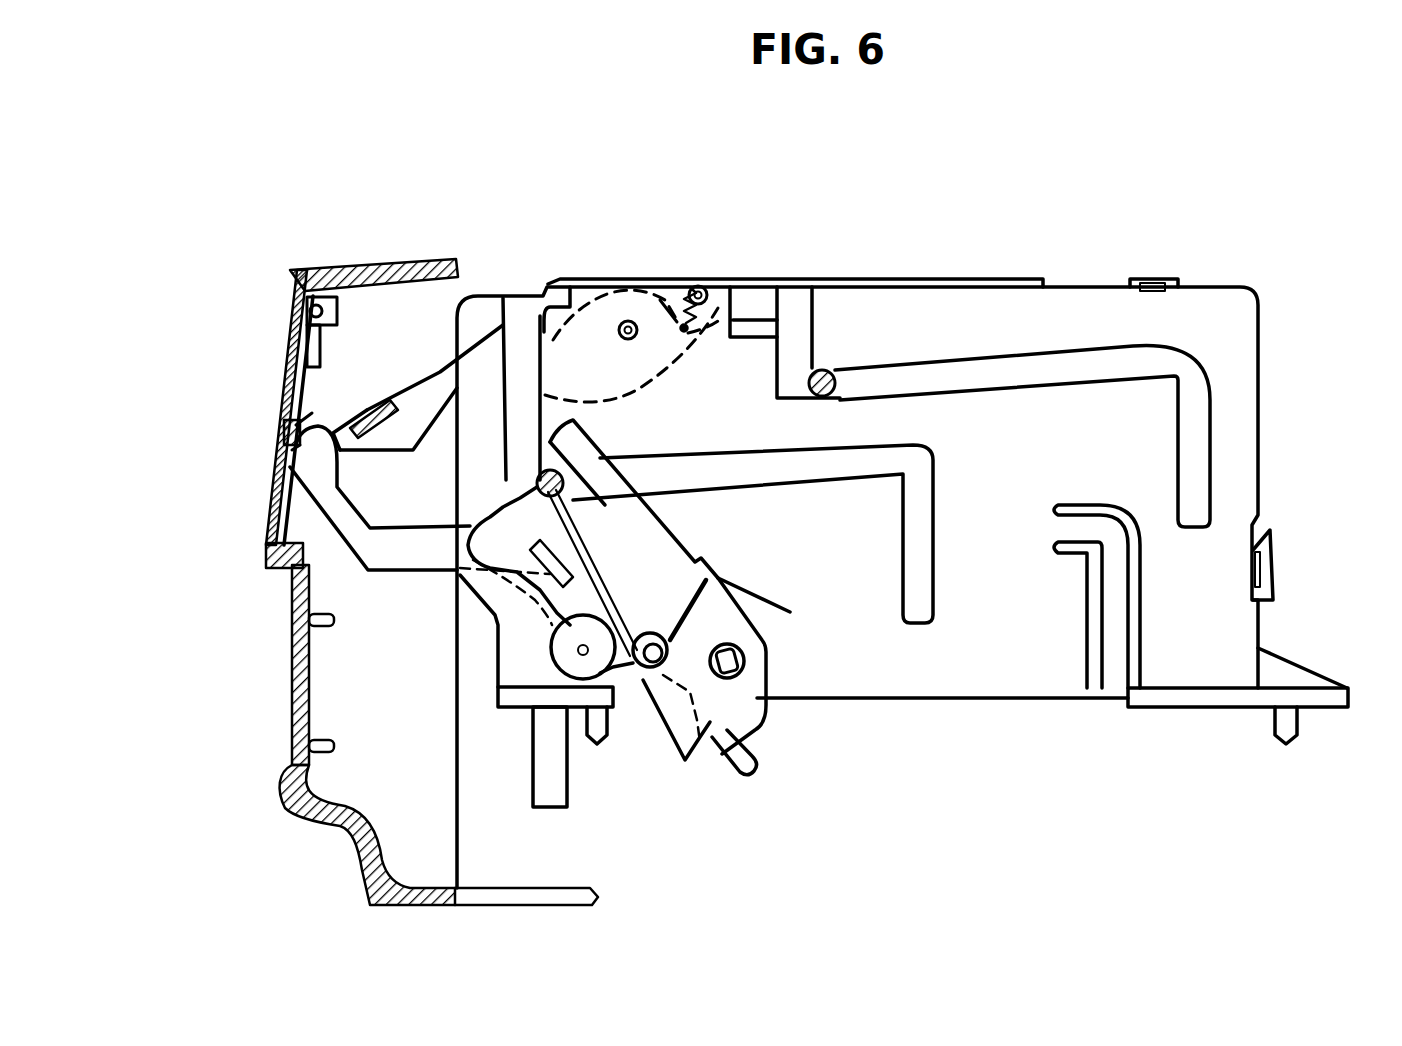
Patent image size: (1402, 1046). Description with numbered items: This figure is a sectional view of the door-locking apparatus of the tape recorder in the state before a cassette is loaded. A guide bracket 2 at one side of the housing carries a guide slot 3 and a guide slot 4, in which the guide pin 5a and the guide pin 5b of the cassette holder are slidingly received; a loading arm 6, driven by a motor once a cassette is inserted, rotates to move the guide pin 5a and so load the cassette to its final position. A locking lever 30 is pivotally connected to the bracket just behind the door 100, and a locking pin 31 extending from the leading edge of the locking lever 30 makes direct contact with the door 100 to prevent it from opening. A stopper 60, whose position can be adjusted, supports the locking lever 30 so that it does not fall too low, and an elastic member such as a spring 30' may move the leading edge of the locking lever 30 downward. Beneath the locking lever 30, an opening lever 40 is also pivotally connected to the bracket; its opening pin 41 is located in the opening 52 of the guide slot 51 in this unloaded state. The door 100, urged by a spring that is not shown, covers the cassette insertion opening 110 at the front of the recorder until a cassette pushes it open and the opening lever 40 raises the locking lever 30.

The guide bracket 2 is at (1240, 285).
The guide slot 3 is at (857, 448).
The guide slot 4 is at (1198, 418).
The guide pin 5a is at (560, 483).
The guide pin 5b is at (822, 380).
The loading arm 6 is at (740, 603).
The locking lever 30 is at (418, 370).
The spring 30' is at (633, 308).
The locking pin 31 is at (372, 410).
The opening lever 40 is at (393, 585).
The opening pin 41 is at (268, 490).
The guide slot 51 is at (278, 432).
The opening 52 is at (285, 418).
The stopper 60 is at (706, 305).
The door 100 is at (262, 385).
The cassette insertion opening 110 is at (256, 478).